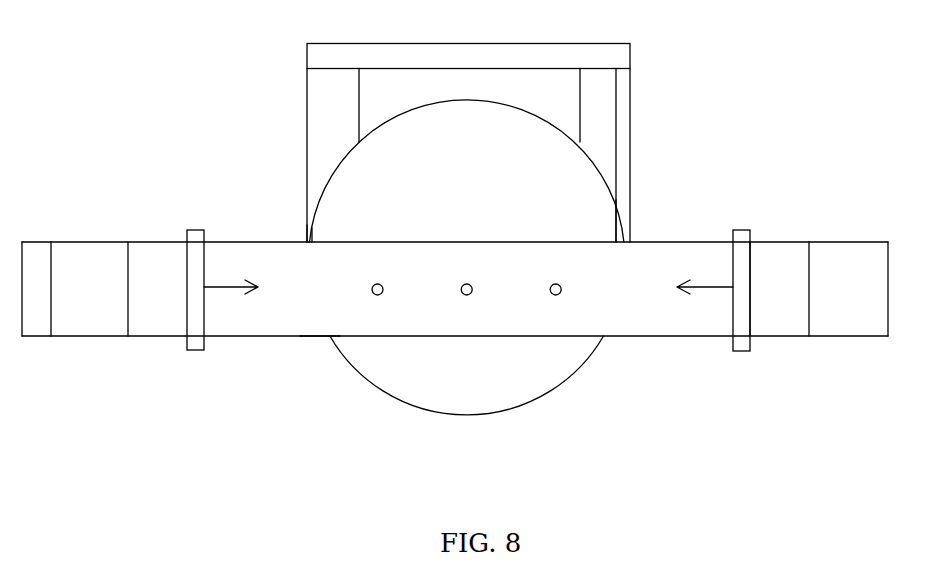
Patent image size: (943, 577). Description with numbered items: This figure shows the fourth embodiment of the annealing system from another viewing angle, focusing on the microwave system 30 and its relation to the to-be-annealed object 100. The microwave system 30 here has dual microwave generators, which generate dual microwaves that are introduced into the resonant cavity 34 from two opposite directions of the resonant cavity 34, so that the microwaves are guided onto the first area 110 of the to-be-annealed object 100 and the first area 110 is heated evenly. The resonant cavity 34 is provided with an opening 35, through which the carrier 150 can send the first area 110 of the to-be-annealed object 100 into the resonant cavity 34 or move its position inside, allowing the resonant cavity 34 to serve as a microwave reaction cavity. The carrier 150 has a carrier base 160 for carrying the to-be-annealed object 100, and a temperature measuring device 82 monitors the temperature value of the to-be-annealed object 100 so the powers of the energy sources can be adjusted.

The microwave system 30 is at (796, 200).
The resonant cavity 34 is at (683, 250).
The opening 35 is at (598, 242).
The temperature measuring device 82 is at (561, 293).
The to-be-annealed object 100 is at (530, 384).
The first area 110 is at (311, 349).
The carrier 150 is at (313, 118).
The carrier base 160 is at (306, 235).